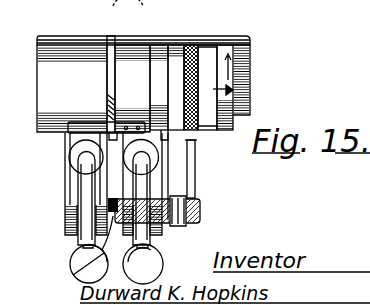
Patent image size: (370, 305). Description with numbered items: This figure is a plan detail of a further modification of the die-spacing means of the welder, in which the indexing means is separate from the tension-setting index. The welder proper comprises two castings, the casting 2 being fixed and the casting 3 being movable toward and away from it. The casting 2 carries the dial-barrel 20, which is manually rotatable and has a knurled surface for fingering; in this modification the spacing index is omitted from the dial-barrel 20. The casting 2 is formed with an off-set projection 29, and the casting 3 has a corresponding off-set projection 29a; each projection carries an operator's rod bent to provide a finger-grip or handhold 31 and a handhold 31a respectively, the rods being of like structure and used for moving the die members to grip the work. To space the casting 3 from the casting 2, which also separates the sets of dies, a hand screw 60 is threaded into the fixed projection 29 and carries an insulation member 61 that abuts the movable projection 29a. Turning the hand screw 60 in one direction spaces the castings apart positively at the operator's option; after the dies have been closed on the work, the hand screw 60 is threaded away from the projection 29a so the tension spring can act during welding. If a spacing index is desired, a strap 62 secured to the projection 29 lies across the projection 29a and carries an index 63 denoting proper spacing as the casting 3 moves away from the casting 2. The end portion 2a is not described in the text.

The casting 2 is at (133, 37).
The end cap 2a is at (250, 100).
The casting 3 is at (41, 72).
The dial-barrel 20 is at (178, 40).
The off-set or projection 29 is at (157, 170).
The off-set or projection 29a is at (73, 198).
The finger-grip or handhold 31 is at (143, 237).
The finger-grip or handhold 31a is at (83, 237).
The hand screw 60 is at (200, 210).
The insulation member 61 is at (80, 270).
The strap 62 is at (107, 92).
The index 63 is at (78, 122).